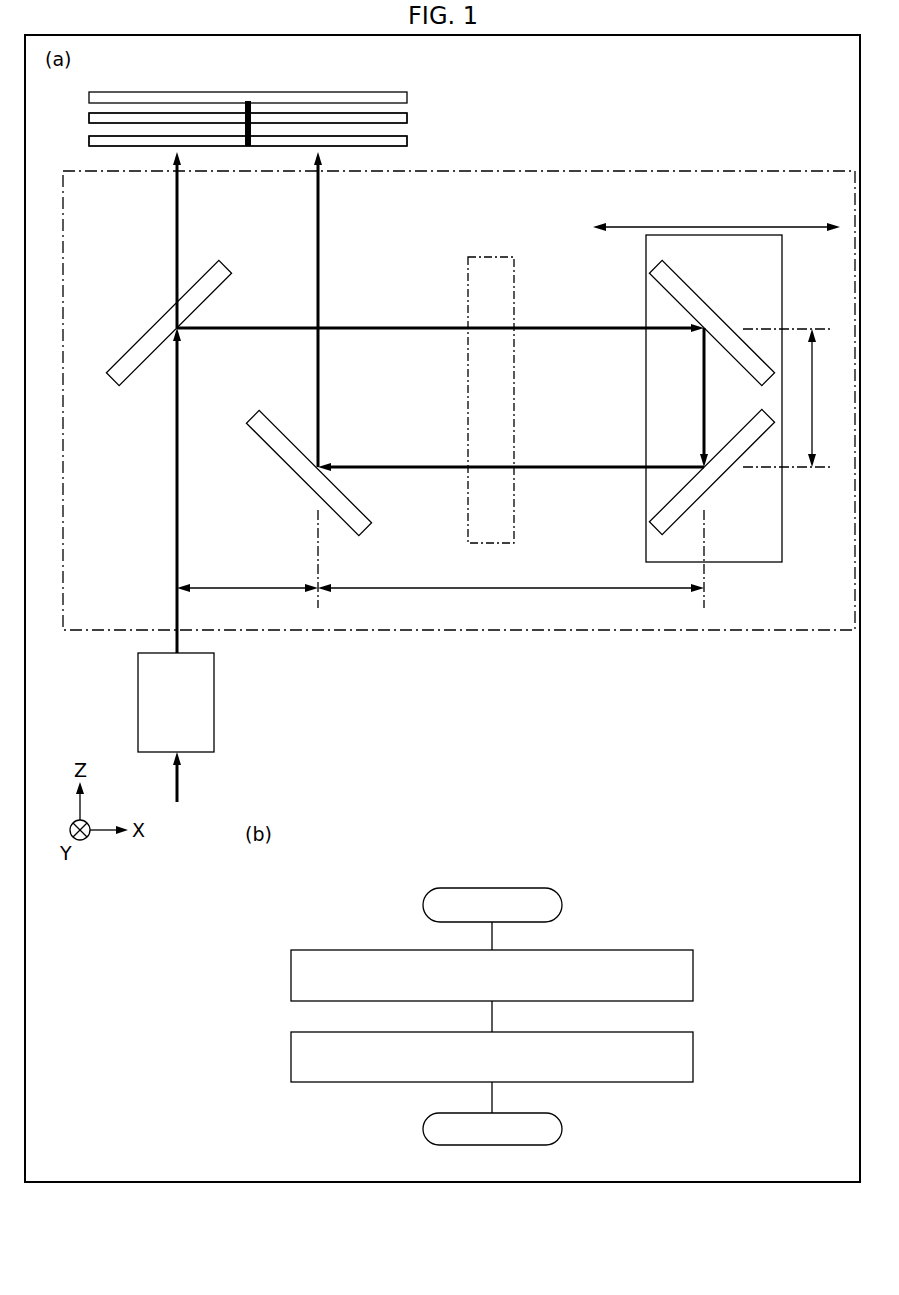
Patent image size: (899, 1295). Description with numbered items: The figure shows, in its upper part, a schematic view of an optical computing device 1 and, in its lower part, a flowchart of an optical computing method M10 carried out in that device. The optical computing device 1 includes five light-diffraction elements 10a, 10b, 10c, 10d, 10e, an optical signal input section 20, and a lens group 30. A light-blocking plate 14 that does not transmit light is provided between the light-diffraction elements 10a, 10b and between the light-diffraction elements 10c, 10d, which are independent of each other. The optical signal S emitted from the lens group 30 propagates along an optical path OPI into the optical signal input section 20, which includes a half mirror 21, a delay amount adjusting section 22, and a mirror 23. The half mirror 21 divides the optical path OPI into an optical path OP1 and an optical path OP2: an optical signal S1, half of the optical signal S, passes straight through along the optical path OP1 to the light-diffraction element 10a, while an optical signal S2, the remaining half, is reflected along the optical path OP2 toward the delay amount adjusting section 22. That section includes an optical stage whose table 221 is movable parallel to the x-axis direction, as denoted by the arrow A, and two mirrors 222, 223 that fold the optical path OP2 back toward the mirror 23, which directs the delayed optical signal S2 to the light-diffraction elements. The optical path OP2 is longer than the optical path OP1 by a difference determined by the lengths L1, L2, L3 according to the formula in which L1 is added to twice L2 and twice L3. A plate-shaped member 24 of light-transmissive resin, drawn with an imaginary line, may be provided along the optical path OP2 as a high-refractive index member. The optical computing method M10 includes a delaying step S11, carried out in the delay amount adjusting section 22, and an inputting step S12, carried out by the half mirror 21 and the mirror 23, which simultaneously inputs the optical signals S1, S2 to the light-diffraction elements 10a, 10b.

The optical computing device 1 is at (574, 108).
The light-diffraction element 10a is at (89, 142).
The light-diffraction element 10b is at (407, 142).
The light-diffraction element 10c is at (89, 118).
The light-diffraction element 10d is at (407, 118).
The light-diffraction element 10e is at (407, 92).
The light-blocking plate 14 is at (247, 146).
The optical signal input section 20 is at (630, 172).
The half mirror 21 is at (154, 320).
The delay amount adjusting section 22 is at (745, 367).
The table 221 is at (782, 270).
The mirror 222 is at (718, 312).
The mirror 223 is at (720, 478).
The mirror 23 is at (298, 483).
The plate-shaped member 24 is at (492, 257).
The lens group 30 is at (214, 702).
The optical signal S is at (175, 542).
The optical signal S1 is at (178, 222).
The optical signal S2 is at (247, 330).
The optical path OP1 is at (152, 238).
The optical path OP2 is at (410, 266).
The optical path OPI is at (150, 452).
The arrow A is at (716, 217).
The length L1 is at (247, 564).
The length L2 is at (511, 564).
The length L3 is at (792, 398).
The optical computing method M10 is at (668, 898).
The delaying step S11 is at (693, 970).
The inputting step S12 is at (693, 1052).